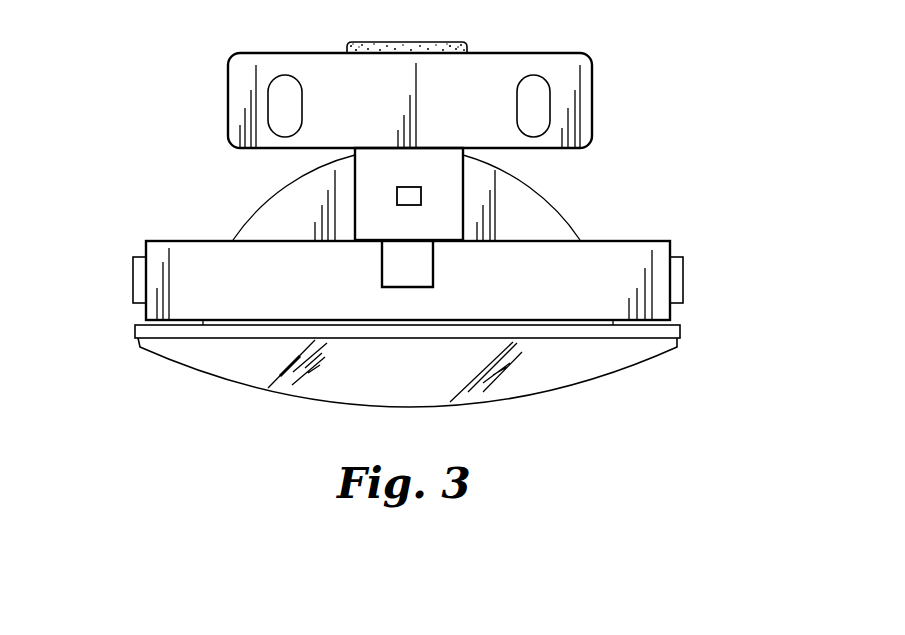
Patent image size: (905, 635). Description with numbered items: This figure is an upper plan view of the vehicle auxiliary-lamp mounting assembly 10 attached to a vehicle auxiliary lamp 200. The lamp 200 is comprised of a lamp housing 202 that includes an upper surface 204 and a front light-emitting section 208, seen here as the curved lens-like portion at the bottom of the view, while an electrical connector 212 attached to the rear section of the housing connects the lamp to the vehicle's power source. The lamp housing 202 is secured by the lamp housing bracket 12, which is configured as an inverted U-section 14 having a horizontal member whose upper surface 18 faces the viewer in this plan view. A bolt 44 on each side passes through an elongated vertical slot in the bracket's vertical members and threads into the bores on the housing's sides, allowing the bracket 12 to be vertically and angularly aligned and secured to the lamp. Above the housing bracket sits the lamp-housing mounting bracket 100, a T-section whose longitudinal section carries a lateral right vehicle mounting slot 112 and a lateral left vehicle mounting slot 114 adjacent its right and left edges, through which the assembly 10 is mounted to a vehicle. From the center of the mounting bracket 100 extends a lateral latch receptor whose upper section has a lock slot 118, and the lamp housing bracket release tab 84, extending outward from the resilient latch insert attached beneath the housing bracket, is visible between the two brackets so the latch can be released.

The assembly 10 is at (665, 48).
The electrical connector 212 is at (350, 43).
The lamp-housing mounting bracket 100 is at (567, 82).
The lateral left vehicle mounting slot 114 is at (285, 105).
The lateral right vehicle mounting slot 112 is at (537, 111).
The lamp housing 202 is at (523, 208).
The lock slot 118 is at (407, 197).
The lamp housing bracket release tab 84 is at (403, 270).
The lamp housing bracket 12 is at (492, 260).
The inverted U-section 14 is at (492, 260).
The upper surface 18 is at (648, 242).
The bolt 44 is at (140, 279).
The vehicle auxiliary lamp 200 is at (675, 330).
The upper surface 204 is at (458, 403).
The front light-emitting section 208 is at (552, 392).